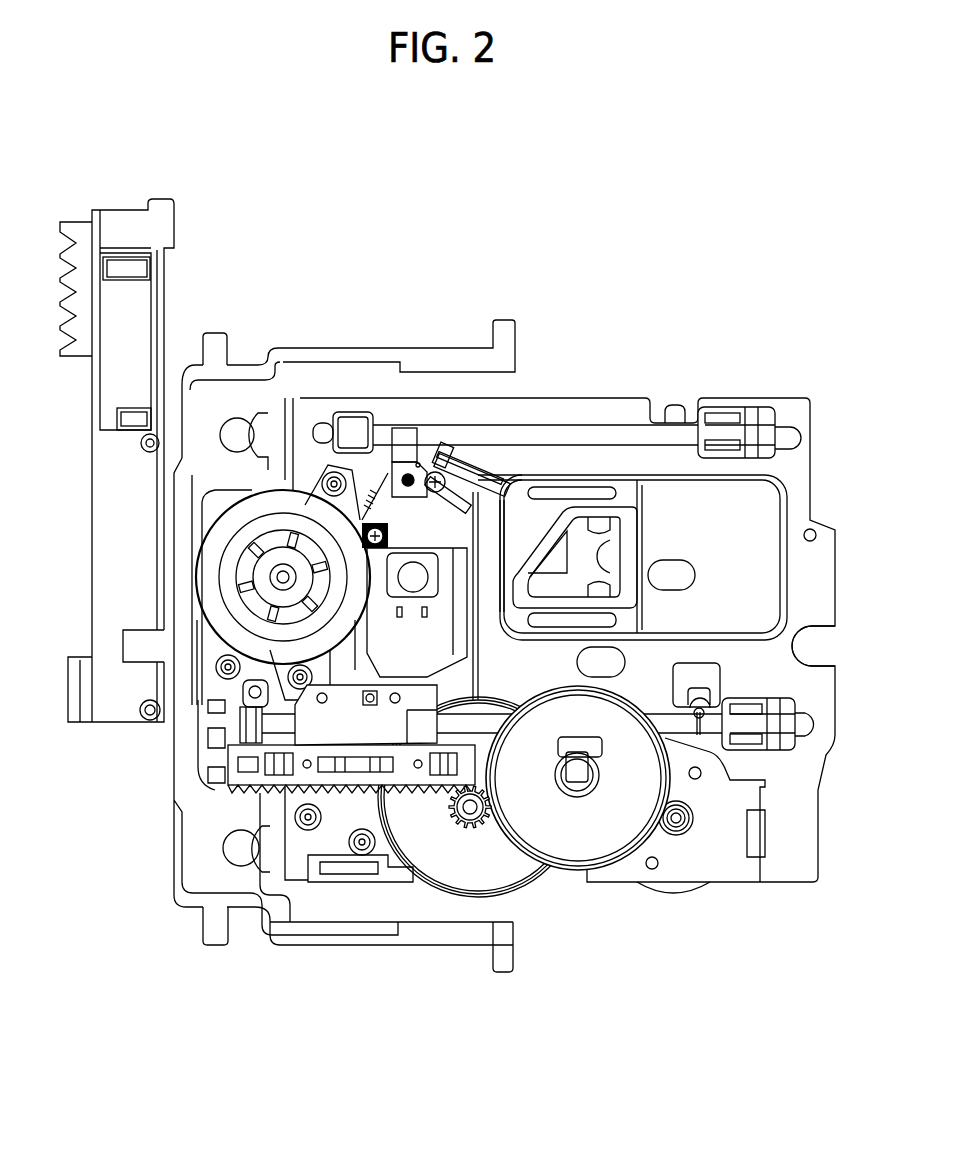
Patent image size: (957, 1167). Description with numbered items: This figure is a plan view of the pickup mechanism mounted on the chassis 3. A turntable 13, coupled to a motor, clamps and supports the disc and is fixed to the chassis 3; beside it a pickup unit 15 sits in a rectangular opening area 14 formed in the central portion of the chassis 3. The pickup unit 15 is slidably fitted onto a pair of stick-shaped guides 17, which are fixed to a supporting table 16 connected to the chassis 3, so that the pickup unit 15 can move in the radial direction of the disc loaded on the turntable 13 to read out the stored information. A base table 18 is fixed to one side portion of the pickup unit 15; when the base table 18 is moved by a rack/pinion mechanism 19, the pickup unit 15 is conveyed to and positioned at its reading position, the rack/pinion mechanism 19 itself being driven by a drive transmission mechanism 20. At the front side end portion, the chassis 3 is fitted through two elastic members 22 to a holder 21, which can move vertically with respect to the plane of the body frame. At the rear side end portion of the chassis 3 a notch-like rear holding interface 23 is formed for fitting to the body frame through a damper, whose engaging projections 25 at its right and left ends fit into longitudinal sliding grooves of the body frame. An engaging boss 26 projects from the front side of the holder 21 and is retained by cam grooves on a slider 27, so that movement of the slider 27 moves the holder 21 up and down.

The chassis 3 is at (553, 876).
The turntable 13 is at (287, 498).
The rectangular opening area 14 is at (768, 563).
The pickup unit 15 is at (412, 572).
The supporting table 16 is at (345, 423).
The stick-shaped guides 17 is at (728, 440).
The base table 18 is at (387, 718).
The rack/pinion mechanism 19 is at (408, 778).
The drive transmission mechanism 20 is at (597, 848).
The holder 21 is at (193, 858).
The elastic members 22 is at (236, 432).
The rear holding interface 23 is at (807, 628).
The engaging projections 25 is at (213, 347).
The engaging boss 26 is at (130, 647).
The slider 27 is at (102, 502).